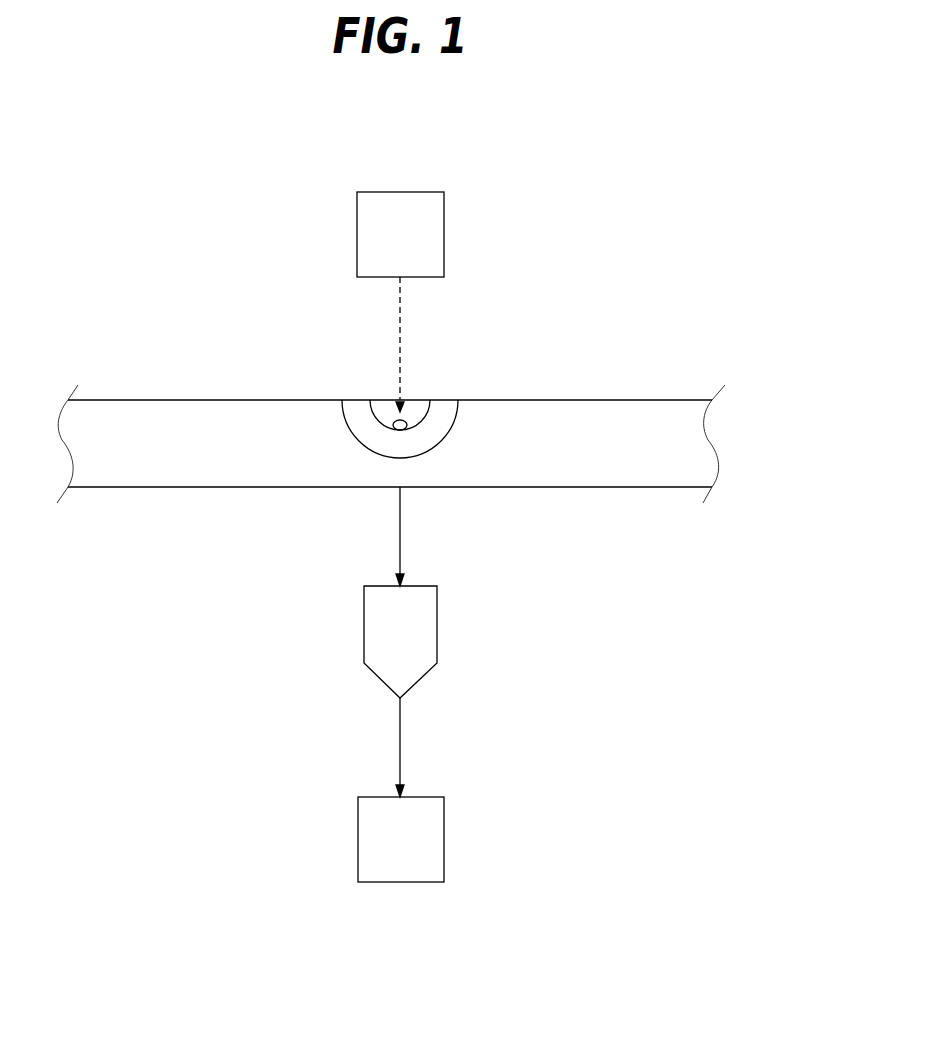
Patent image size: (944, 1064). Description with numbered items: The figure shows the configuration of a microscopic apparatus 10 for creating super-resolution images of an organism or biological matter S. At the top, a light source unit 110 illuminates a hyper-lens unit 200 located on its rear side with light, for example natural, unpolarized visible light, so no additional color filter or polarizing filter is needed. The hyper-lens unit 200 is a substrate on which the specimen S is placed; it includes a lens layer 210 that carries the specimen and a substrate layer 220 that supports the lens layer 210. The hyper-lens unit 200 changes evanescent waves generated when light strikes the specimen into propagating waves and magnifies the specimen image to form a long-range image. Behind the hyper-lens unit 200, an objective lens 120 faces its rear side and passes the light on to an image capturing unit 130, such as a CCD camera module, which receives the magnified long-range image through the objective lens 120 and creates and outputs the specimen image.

The microscopic apparatus 10 is at (411, 133).
The light source unit 110 is at (444, 232).
The objective lens 120 is at (437, 622).
The image capturing unit 130 is at (444, 836).
The hyper-lens unit 200 is at (391, 409).
The lens layer 210 is at (452, 405).
The substrate layer 220 is at (531, 416).
The organism or biological matter S is at (393, 422).